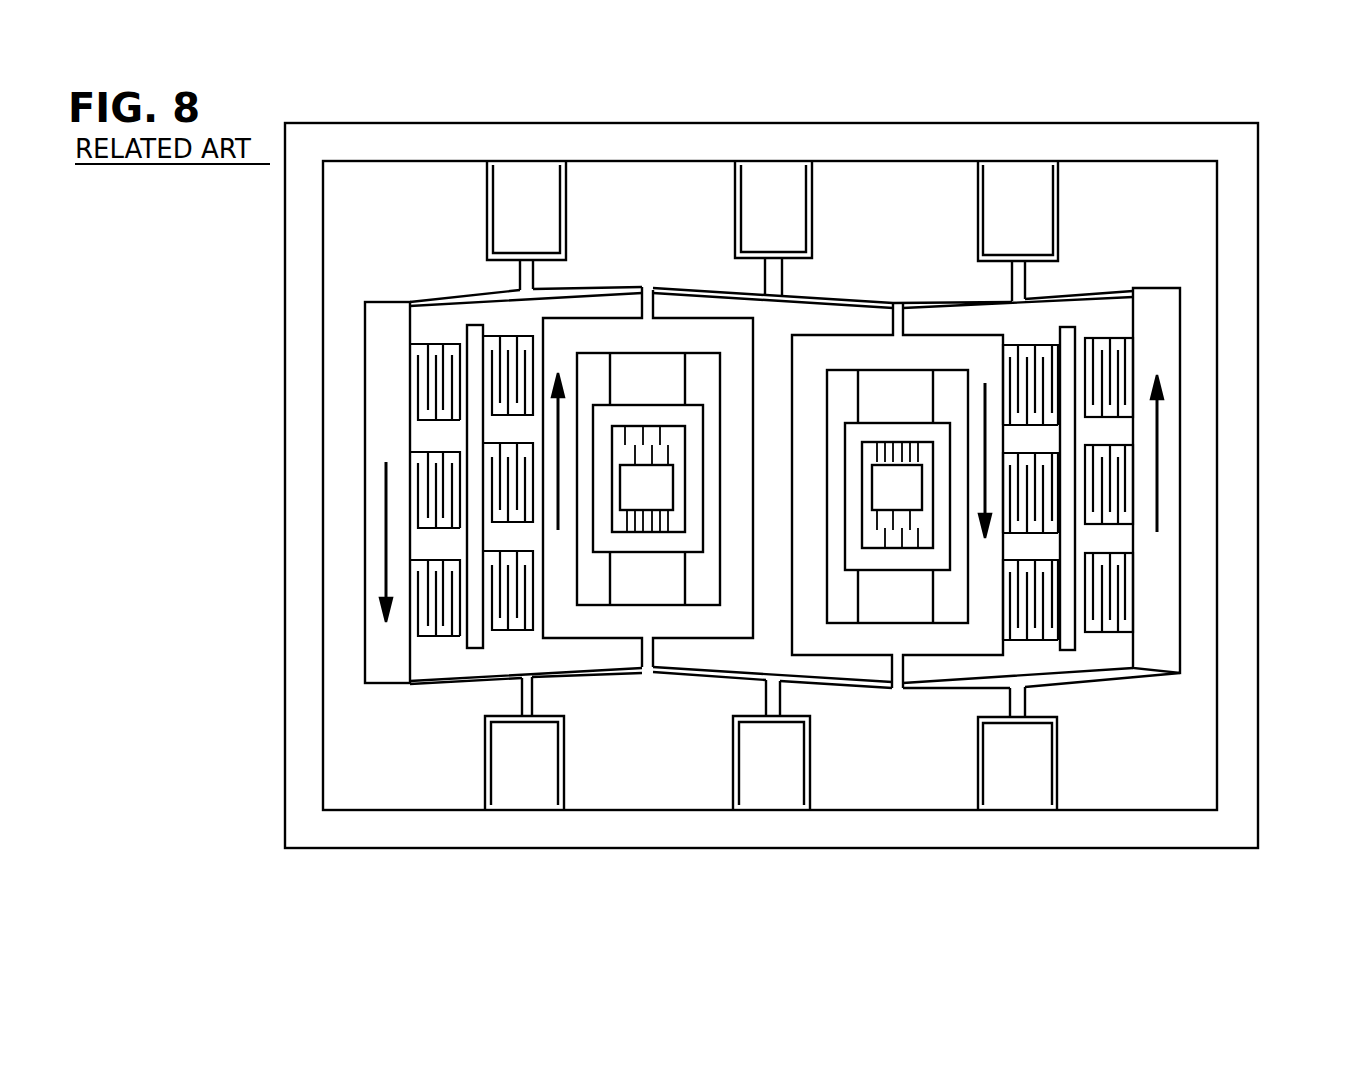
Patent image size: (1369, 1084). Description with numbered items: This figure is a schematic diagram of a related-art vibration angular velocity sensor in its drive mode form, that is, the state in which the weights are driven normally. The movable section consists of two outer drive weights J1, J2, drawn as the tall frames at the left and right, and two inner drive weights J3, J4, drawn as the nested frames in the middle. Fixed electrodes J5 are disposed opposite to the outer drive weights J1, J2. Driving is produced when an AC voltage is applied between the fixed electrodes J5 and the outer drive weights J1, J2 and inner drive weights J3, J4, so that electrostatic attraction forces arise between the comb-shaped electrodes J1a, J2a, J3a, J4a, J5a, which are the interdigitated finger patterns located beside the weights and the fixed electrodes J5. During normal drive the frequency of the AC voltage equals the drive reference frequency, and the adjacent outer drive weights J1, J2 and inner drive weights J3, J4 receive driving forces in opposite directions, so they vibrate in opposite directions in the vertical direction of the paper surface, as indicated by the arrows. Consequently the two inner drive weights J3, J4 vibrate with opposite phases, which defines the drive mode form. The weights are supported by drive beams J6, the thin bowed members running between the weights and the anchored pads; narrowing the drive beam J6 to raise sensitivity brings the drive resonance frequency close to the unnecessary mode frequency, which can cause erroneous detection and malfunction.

The outer drive weight J1 is at (363, 320).
The comb-shaped electrode J1a is at (435, 343).
The outer drive weight J2 is at (1180, 326).
The comb-shaped electrode J2a is at (1130, 633).
The inner drive weight J3 is at (701, 318).
The comb-shaped electrode J3a is at (500, 630).
The inner drive weight J4 is at (842, 335).
The comb-shaped electrode J4a is at (1042, 335).
The fixed electrode J5 is at (473, 648).
The comb-shaped electrode J5a is at (445, 638).
The drive beam J6 is at (943, 688).